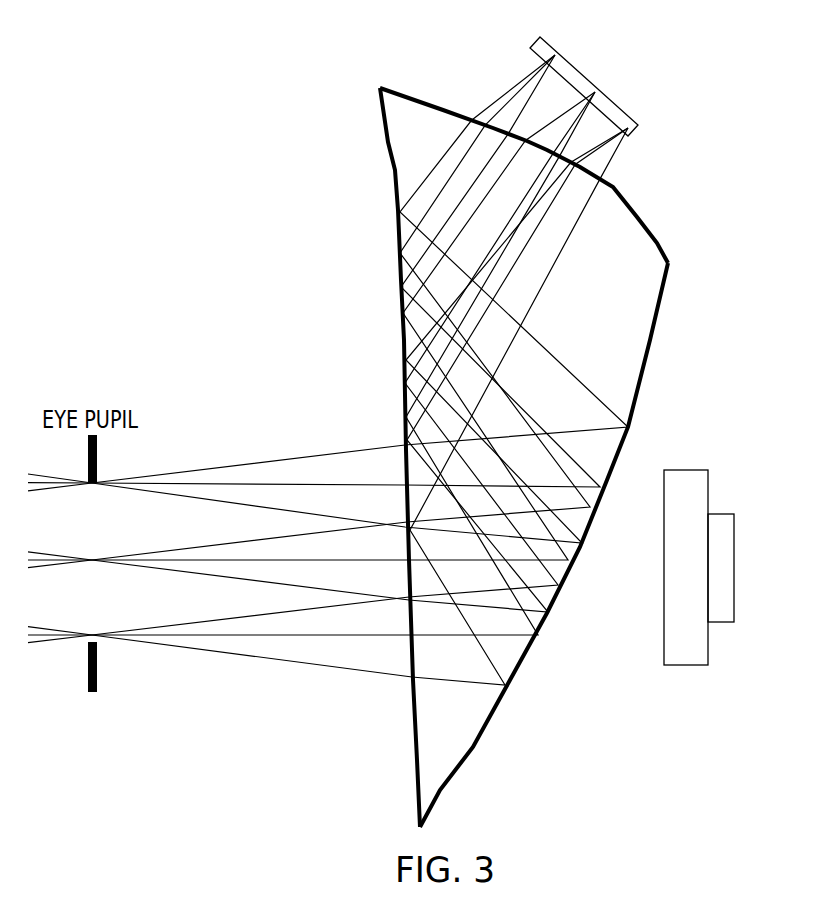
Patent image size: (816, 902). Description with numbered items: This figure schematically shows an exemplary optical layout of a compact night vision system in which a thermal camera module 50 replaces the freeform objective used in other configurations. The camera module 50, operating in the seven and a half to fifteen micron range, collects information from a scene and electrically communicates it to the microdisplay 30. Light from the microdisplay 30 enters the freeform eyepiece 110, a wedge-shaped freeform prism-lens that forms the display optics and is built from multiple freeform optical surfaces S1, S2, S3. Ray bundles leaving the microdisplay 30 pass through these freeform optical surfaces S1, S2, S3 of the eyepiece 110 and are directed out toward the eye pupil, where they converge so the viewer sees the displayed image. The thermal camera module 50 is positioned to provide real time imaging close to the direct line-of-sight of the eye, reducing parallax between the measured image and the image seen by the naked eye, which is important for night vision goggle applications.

The freeform eyepiece 110 is at (478, 422).
The freeform optical surface S1 is at (414, 758).
The freeform optical surface S2 is at (477, 743).
The freeform optical surface S3 is at (413, 100).
The microdisplay 30 is at (572, 65).
The thermal camera module 50 is at (722, 514).